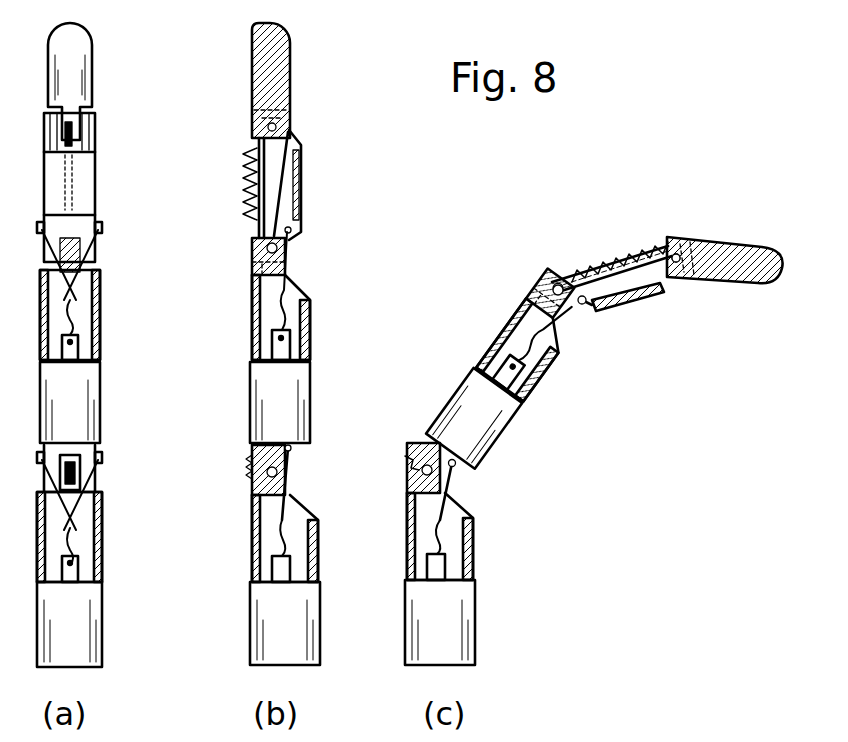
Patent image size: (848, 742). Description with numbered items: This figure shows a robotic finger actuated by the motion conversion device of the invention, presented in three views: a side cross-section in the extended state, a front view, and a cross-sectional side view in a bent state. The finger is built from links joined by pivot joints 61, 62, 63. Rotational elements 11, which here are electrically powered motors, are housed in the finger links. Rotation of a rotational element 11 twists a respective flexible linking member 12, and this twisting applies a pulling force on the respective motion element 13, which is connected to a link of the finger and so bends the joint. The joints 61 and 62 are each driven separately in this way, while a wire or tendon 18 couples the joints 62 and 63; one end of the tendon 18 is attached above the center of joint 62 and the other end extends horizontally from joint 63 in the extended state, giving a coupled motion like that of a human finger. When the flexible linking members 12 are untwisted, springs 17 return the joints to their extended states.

The rotational element 11 is at (272, 378).
The flexible linking member 12 is at (278, 303).
The motion element 13 is at (255, 245).
The spring 17 is at (232, 188).
The wire or tendon 18 is at (248, 150).
The pivot joint 61 is at (420, 472).
The pivot joint 62 is at (545, 288).
The pivot joint 63 is at (676, 254).